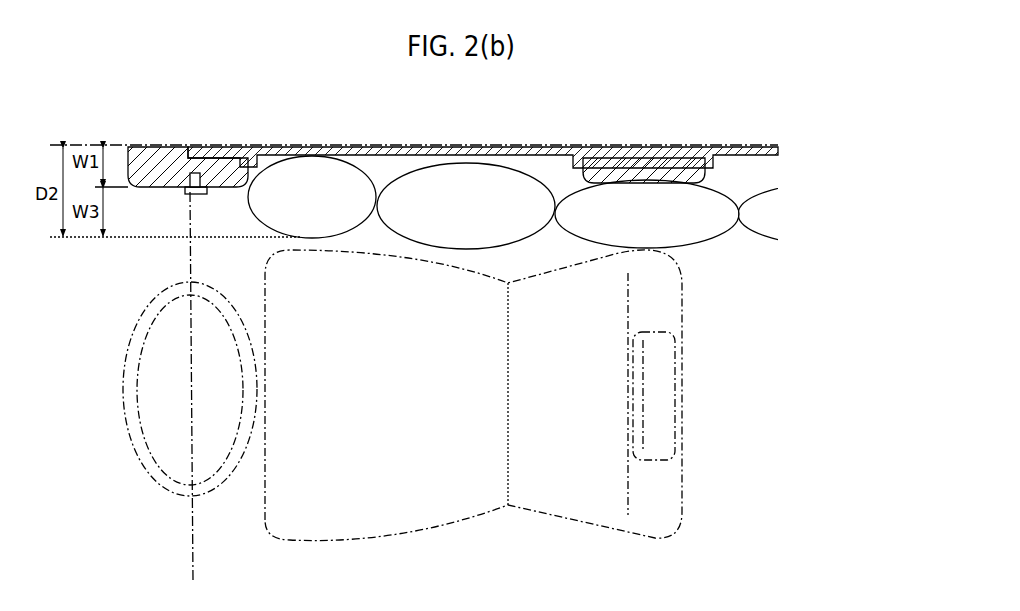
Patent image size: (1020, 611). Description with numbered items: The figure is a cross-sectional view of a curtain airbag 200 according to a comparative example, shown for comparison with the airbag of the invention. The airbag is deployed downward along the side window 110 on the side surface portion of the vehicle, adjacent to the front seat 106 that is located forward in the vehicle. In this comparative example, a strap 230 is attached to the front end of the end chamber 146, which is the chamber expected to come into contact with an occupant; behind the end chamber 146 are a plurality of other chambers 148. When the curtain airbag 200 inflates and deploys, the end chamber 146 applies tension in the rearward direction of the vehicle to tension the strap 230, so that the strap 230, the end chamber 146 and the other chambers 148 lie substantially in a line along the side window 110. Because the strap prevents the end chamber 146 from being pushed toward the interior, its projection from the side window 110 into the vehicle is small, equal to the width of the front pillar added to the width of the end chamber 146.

The front seat 106 is at (172, 147).
The side window 110 is at (520, 145).
The strap 230 is at (240, 189).
The end chamber 146 is at (322, 229).
The other chambers 148 is at (455, 230).
The curtain airbag 200 is at (724, 278).